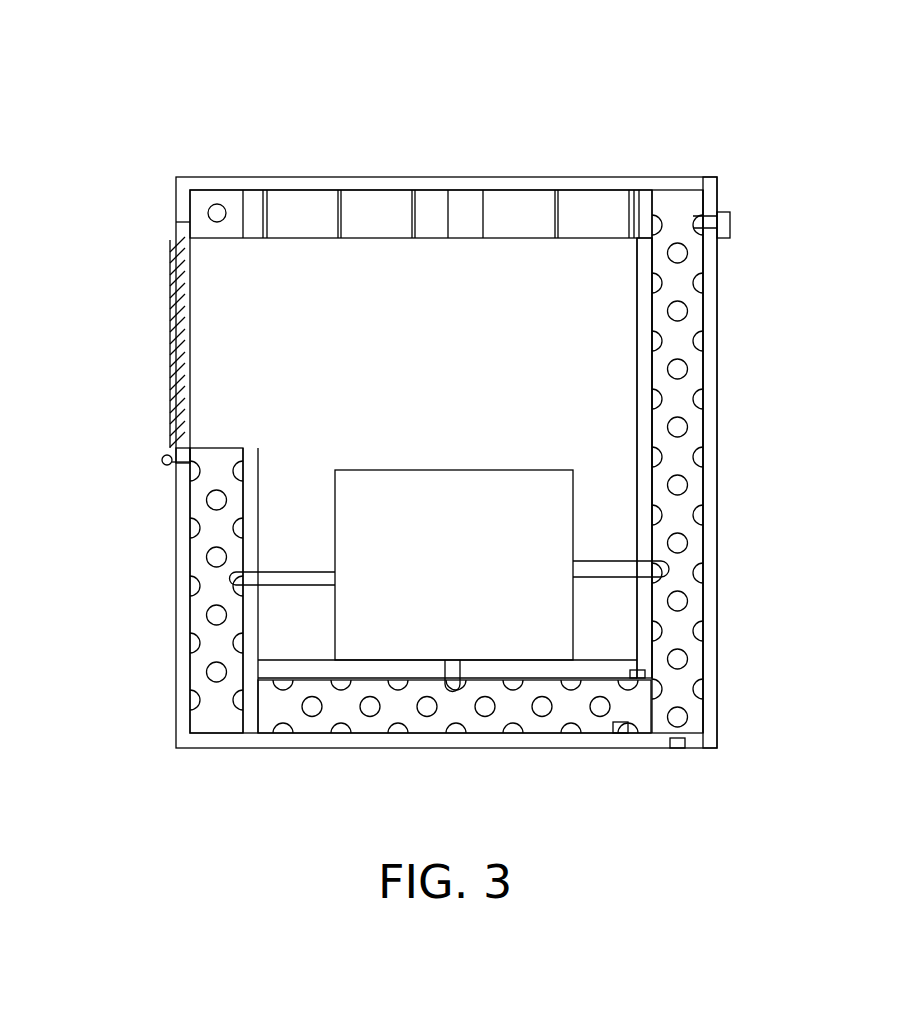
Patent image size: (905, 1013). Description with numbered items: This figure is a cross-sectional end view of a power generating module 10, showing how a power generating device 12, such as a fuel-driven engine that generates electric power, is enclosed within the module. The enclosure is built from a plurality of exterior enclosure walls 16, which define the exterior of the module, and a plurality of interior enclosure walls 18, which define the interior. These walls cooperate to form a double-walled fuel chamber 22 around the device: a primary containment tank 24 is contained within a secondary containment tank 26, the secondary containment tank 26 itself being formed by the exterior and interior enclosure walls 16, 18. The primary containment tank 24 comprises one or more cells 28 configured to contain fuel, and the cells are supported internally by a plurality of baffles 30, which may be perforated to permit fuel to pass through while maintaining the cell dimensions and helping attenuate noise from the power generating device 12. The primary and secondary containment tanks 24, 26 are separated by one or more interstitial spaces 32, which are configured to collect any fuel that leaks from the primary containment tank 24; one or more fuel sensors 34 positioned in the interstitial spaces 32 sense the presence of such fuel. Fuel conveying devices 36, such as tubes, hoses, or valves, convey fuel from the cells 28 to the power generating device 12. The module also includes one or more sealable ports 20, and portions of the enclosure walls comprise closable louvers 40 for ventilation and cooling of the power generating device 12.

The power generating module 10 is at (502, 424).
The power generating device 12 is at (445, 468).
The exterior enclosure walls 16 is at (720, 490).
The interior enclosure walls 18 is at (637, 312).
The sealable port 20 is at (732, 222).
The fuel chamber 22 is at (728, 471).
The primary containment tank 24 is at (594, 458).
The secondary containment tank 26 is at (771, 462).
The cells 28 is at (457, 642).
The baffles 30 is at (705, 314).
The interstitial spaces 32 is at (637, 262).
The fuel sensors 34 is at (632, 670).
The fuel conveying devices 36 is at (290, 572).
The louvers 40 is at (178, 272).